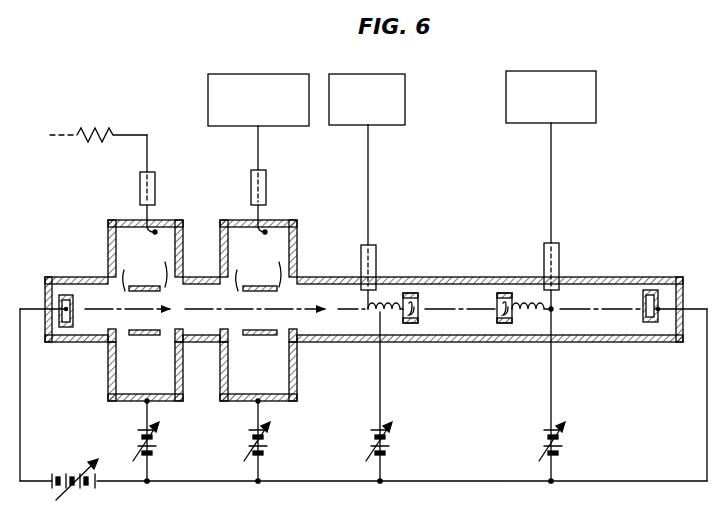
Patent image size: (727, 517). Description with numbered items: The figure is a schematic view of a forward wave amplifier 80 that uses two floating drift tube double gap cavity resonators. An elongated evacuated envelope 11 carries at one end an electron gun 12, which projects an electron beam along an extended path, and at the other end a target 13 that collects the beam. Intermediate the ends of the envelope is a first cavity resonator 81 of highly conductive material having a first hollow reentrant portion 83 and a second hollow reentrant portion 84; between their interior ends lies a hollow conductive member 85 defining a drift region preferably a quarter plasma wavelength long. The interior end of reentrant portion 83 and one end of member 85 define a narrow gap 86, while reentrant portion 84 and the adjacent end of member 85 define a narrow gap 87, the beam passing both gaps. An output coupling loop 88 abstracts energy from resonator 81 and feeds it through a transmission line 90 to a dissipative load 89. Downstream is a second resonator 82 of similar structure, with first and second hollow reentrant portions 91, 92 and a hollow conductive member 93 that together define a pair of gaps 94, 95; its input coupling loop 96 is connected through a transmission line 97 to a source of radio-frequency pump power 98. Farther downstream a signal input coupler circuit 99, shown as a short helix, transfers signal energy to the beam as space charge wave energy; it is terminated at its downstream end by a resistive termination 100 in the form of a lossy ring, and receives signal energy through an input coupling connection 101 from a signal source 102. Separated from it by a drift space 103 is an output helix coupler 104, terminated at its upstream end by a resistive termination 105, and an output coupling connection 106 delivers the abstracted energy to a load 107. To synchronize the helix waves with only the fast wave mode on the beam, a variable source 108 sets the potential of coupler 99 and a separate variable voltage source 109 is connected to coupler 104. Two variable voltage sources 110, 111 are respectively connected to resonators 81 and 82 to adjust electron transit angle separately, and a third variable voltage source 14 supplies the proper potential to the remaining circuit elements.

The evacuated envelope 11 is at (62, 275).
The electron gun 12 is at (67, 327).
The target 13 is at (652, 322).
The third variable voltage source 14 is at (70, 470).
The forward wave amplifier 80 is at (364, 318).
The first cavity resonator 81 is at (107, 370).
The second resonator 82 is at (219, 370).
The first hollow reentrant portion 83 is at (107, 331).
The second hollow reentrant portion 84 is at (178, 328).
The hollow conductive member 85 is at (156, 329).
The narrow gap 86 is at (141, 276).
The narrow gap 87 is at (158, 265).
The output coupling loop 88 is at (146, 232).
The dissipative load 89 is at (90, 128).
The transmission line 90 is at (155, 193).
The first hollow reentrant portion 91 is at (229, 329).
The second hollow reentrant portion 92 is at (293, 328).
The hollow conductive member 93 is at (272, 329).
The gap 94 is at (256, 276).
The gap 95 is at (272, 265).
The input coupling loop 96 is at (259, 233).
The transmission line 97 is at (266, 192).
The source of radio-frequency pump power 98 is at (207, 104).
The signal input coupler circuit 99 is at (390, 292).
The resistive termination 100 is at (410, 323).
The input coupling connection 101 is at (376, 259).
The signal source 102 is at (400, 118).
The drift space 103 is at (458, 293).
The output helix coupler 104 is at (526, 315).
The resistive termination 105 is at (504, 292).
The output coupling connection 106 is at (560, 259).
The load 107 is at (590, 113).
The variable source 108 is at (394, 440).
The variable voltage source 109 is at (567, 440).
The variable voltage source 110 is at (162, 440).
The variable voltage source 111 is at (273, 440).